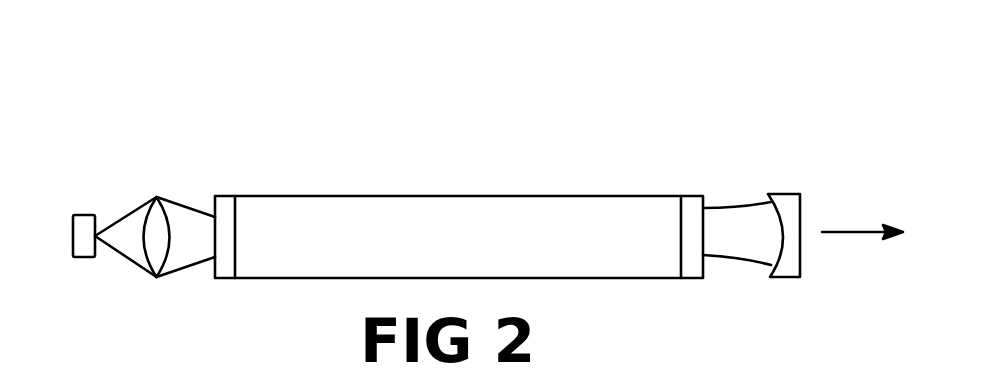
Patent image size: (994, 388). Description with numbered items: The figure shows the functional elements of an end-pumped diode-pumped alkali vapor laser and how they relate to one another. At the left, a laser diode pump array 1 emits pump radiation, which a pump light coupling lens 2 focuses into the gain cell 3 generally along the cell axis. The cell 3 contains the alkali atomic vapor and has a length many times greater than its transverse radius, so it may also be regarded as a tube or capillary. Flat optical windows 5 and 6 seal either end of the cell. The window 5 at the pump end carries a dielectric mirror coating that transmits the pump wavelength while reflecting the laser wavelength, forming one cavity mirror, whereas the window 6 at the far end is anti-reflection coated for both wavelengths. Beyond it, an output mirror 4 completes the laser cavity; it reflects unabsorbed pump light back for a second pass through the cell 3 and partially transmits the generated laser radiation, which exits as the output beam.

The laser diode pump array 1 is at (81, 215).
The pump light coupling lens 2 is at (158, 197).
The cell 3 is at (398, 196).
The output mirror 4 is at (788, 194).
The window 5 is at (229, 196).
The window 6 is at (692, 196).